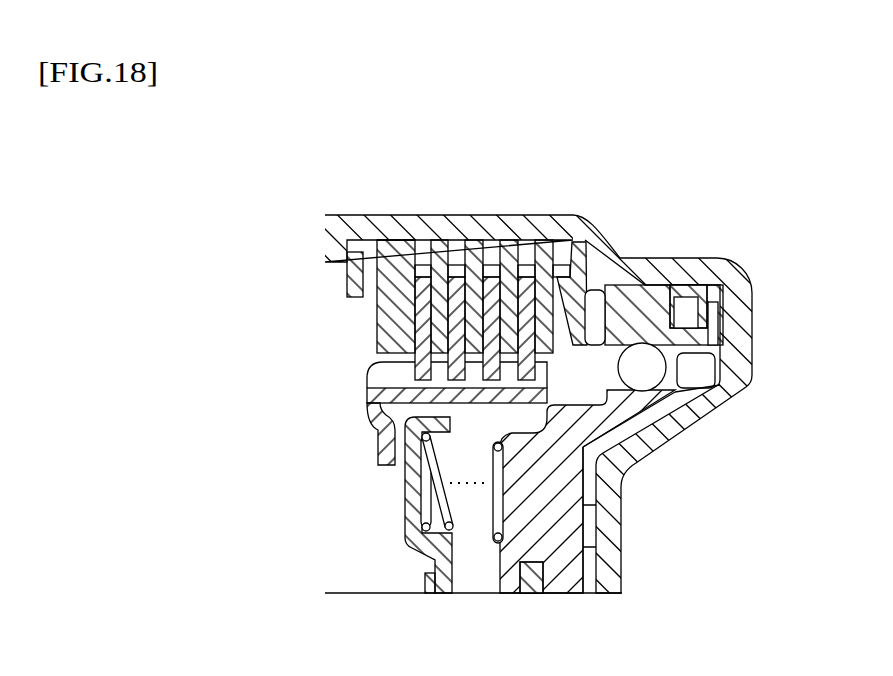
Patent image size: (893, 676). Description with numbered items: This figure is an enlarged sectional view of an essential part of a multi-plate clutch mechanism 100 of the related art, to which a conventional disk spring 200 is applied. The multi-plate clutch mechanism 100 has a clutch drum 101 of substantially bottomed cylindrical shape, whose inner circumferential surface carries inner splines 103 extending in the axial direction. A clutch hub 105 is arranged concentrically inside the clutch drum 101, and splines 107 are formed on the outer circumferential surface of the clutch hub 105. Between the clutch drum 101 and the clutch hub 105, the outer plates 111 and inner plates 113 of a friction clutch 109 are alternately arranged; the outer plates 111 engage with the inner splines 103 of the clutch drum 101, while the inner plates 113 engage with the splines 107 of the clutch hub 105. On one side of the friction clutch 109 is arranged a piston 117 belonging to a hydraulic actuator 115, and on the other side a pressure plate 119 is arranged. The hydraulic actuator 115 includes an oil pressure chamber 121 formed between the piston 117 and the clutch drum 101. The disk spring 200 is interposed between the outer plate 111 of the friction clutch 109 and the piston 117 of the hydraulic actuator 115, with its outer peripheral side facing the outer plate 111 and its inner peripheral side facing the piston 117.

The multi-plate clutch mechanism 100 is at (671, 227).
The clutch drum 101 is at (702, 273).
The inner splines 103 is at (520, 243).
The clutch hub 105 is at (367, 413).
The splines 107 is at (403, 373).
The friction clutch 109 is at (457, 248).
The outer plates 111 is at (550, 247).
The inner plates 113 is at (403, 326).
The hydraulic actuator 115 is at (494, 563).
The piston 117 is at (573, 520).
The pressure plate 119 is at (393, 247).
The oil pressure chamber 121 is at (618, 455).
The disk spring 200 is at (597, 267).